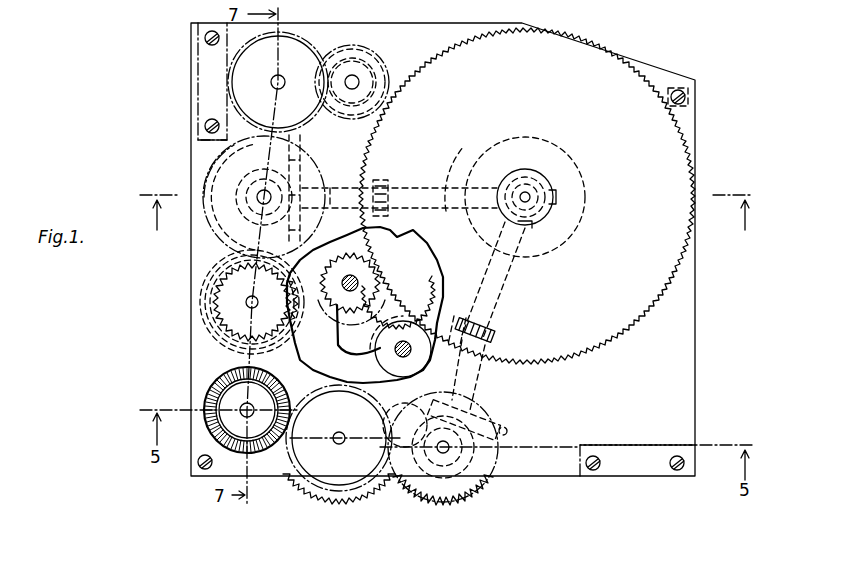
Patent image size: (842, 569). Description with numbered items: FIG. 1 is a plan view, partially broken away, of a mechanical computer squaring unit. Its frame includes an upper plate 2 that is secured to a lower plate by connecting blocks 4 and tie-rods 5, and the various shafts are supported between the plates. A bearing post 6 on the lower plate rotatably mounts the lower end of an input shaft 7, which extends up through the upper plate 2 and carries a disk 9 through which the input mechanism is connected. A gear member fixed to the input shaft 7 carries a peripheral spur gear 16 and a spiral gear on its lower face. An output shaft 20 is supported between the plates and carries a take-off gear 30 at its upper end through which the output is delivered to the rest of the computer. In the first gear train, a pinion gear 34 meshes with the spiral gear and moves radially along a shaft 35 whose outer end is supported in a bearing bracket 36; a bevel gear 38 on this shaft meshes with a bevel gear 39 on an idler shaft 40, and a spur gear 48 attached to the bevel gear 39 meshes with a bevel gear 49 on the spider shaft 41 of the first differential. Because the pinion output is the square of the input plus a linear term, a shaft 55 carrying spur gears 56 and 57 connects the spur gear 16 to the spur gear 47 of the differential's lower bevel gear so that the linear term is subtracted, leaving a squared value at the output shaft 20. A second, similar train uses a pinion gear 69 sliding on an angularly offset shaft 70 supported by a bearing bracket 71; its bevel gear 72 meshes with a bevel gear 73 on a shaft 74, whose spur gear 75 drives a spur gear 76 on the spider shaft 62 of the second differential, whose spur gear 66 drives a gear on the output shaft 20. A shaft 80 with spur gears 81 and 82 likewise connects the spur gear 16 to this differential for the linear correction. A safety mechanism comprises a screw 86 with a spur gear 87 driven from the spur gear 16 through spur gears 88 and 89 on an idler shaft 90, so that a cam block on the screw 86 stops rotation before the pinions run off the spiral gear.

The upper plate 2 is at (210, 70).
The connecting blocks 4 is at (196, 50).
The tie-rods 5 is at (690, 106).
The bearing post 6 is at (446, 222).
The input shaft 7 is at (533, 192).
The disk 9 is at (556, 210).
The spur gear 16 is at (585, 42).
The output shaft 20 is at (243, 405).
The take-off gear 30 is at (218, 400).
The pinion gear 34 is at (384, 178).
The shaft 35 is at (470, 176).
The bearing bracket 36 is at (320, 182).
The bevel gear 38 is at (302, 152).
The bevel gear 39 is at (264, 197).
The idler shaft 40 is at (257, 198).
The spider shaft 41 is at (250, 302).
The spur gear 47 is at (205, 318).
The spur gear 48 is at (245, 170).
The bevel gear 49 is at (200, 297).
The shaft 55 is at (366, 290).
The spur gear 56 is at (358, 280).
The spur gear 57 is at (365, 305).
The spider shaft 62 is at (341, 432).
The spur gear 66 is at (385, 478).
The pinion gear 69 is at (500, 330).
The shaft 70 is at (500, 293).
The bearing bracket 71 is at (490, 403).
The bevel gear 72 is at (508, 431).
The bevel gear 73 is at (470, 456).
The shaft 74 is at (441, 452).
The spur gear 75 is at (450, 505).
The spur gear 76 is at (355, 503).
The shaft 80 is at (451, 330).
The spur gear 81 is at (399, 424).
The spur gear 82 is at (420, 283).
The screw 86 is at (282, 79).
The spur gear 87 is at (298, 33).
The spur gear 88 is at (400, 68).
The spur gear 89 is at (368, 48).
The idler shaft 90 is at (345, 86).